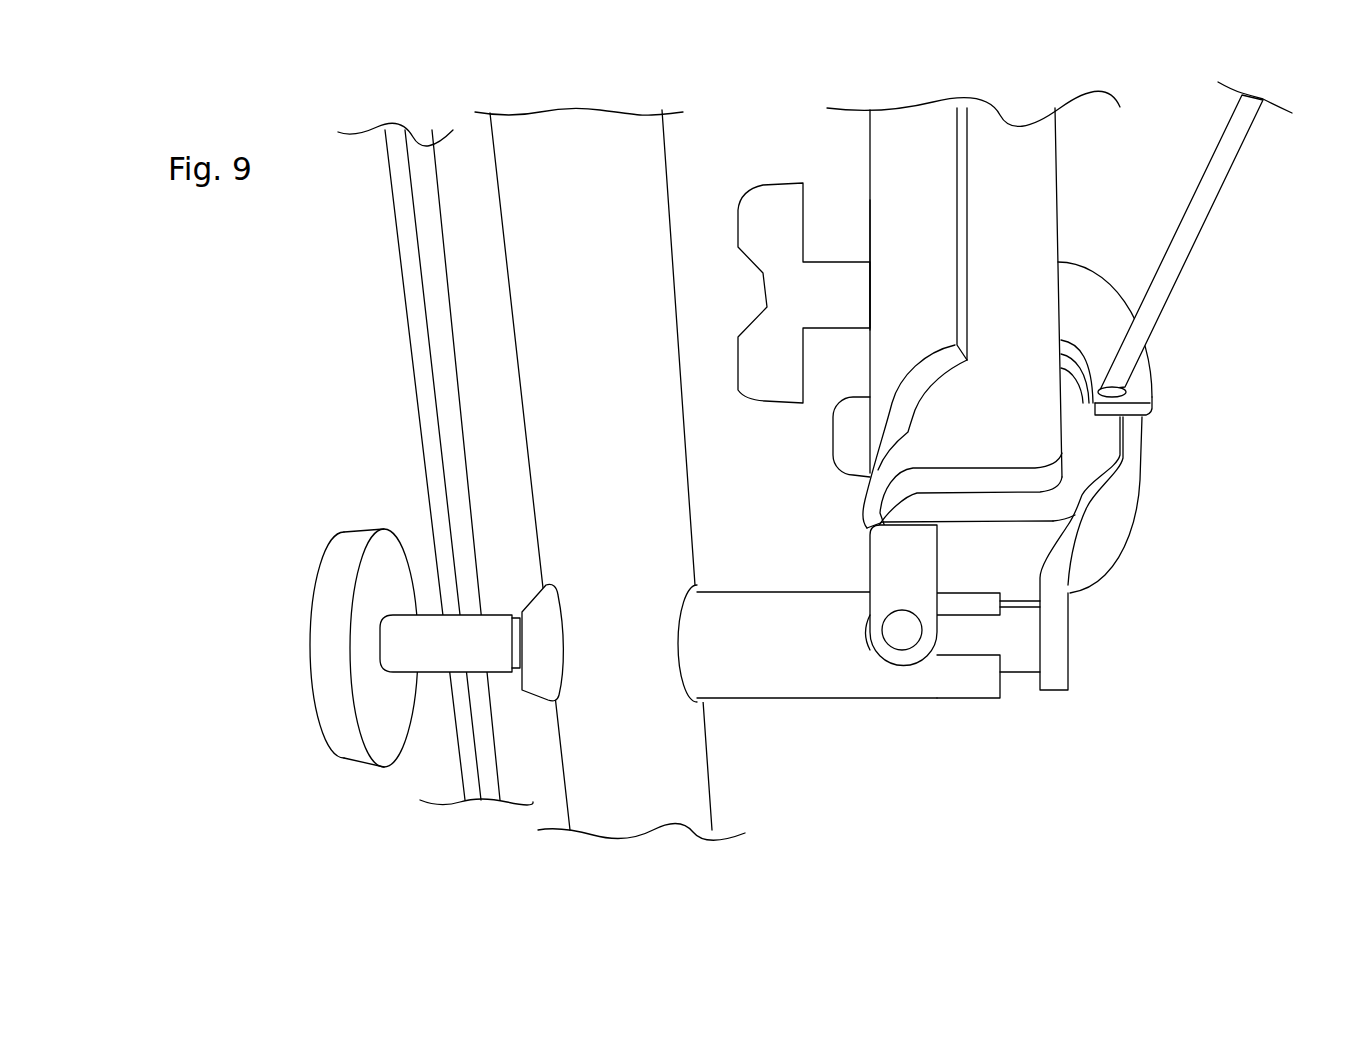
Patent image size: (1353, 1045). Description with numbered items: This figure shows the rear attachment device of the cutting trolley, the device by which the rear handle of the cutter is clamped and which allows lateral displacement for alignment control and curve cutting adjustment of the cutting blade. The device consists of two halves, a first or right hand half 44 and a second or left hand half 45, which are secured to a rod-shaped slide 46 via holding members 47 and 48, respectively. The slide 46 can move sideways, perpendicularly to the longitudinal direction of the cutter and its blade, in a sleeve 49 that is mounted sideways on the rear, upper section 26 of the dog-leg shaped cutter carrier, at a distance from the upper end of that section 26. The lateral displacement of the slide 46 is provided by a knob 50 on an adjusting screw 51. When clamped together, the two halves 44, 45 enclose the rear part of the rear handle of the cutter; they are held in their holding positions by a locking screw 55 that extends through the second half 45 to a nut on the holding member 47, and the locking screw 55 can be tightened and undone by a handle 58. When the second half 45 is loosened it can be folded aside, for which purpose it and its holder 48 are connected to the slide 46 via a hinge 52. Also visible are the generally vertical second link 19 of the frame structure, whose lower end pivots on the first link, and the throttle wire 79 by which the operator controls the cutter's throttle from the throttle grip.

The second link 19 is at (413, 367).
The rear upper section 26 is at (628, 138).
The first half 44 is at (997, 127).
The second half 45 is at (908, 125).
The slide 46 is at (1013, 658).
The holding member 47 is at (1060, 653).
The holding member 48 is at (873, 565).
The sleeve 49 is at (790, 698).
The knob 50 is at (344, 578).
The adjusting screw 51 is at (453, 657).
The hinge 52 is at (900, 633).
The locking screw 55 is at (843, 260).
The handle 58 is at (763, 212).
The throttle wire 79 is at (1213, 212).